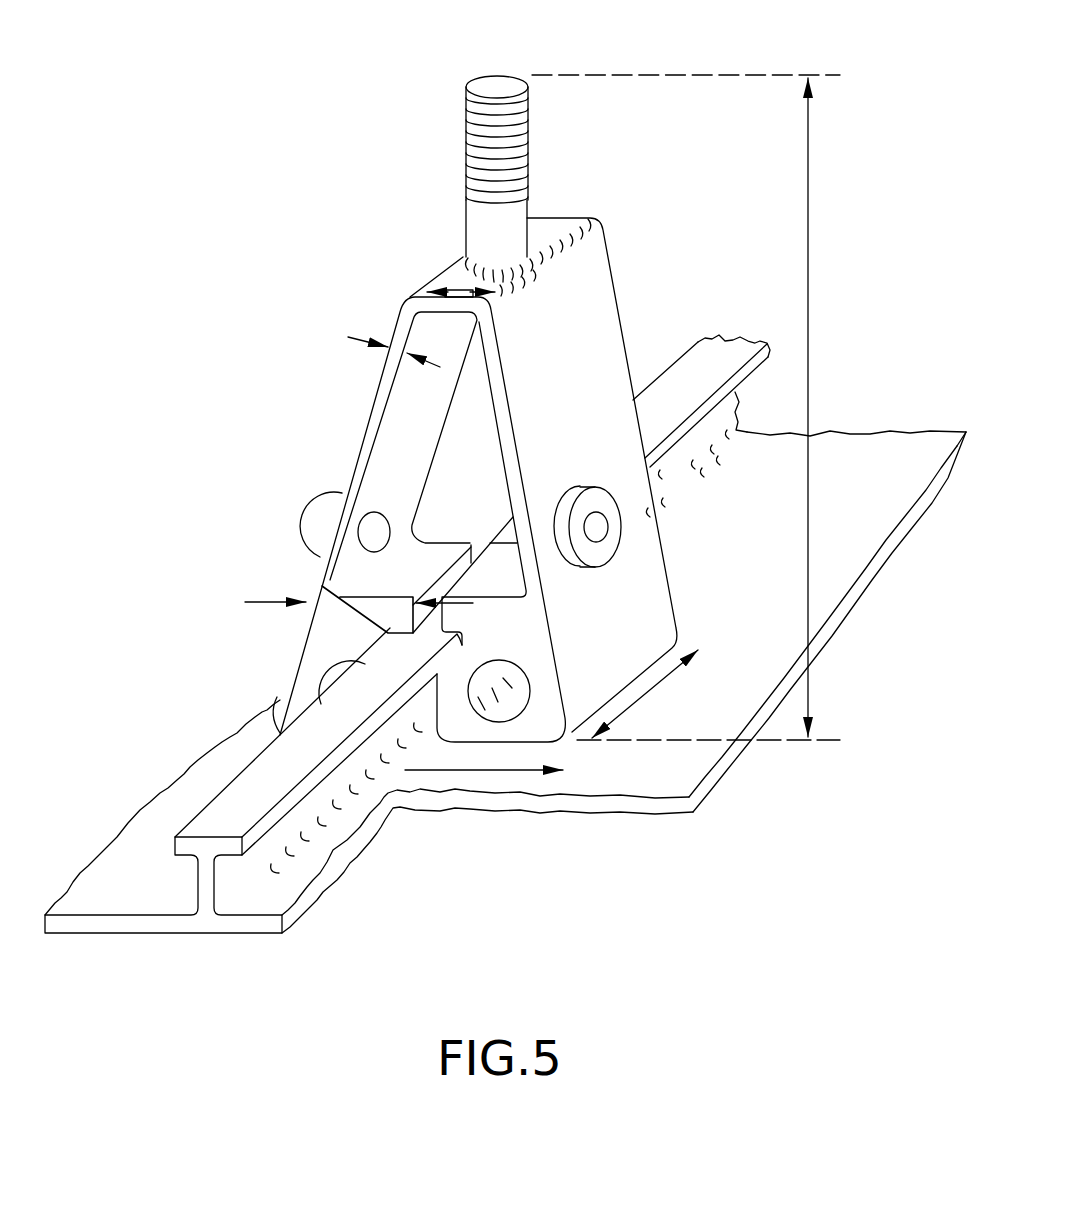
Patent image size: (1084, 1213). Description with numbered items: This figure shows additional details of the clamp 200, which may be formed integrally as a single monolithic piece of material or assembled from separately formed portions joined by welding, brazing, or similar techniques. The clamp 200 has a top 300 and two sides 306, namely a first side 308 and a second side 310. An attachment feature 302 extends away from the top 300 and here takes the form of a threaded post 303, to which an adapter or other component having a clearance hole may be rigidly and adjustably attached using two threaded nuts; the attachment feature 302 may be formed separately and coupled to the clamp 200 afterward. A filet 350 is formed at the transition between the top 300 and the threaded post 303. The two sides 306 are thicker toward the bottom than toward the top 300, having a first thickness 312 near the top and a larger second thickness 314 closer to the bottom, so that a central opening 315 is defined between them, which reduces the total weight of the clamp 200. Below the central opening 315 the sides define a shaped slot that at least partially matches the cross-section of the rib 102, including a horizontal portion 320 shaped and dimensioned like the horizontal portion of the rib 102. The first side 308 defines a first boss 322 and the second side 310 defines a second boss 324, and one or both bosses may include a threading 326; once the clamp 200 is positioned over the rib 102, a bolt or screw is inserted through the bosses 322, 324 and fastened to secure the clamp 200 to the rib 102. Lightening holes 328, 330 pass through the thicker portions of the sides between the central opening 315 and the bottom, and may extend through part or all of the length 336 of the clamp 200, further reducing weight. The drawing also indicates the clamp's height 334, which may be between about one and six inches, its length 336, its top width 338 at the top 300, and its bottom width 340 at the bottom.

The rib 102 is at (742, 378).
The clamp 200 is at (268, 277).
The top 300 is at (447, 278).
The attachment feature 302 is at (477, 88).
The threaded post 303 is at (524, 85).
The two sides 306 is at (333, 463).
The first side 308 is at (370, 410).
The second side 310 is at (603, 297).
The first thickness 312 is at (362, 336).
The second thickness 314 is at (245, 600).
The central opening 315 is at (491, 462).
The horizontal portion 320 is at (312, 590).
The first boss 322 is at (325, 513).
The second boss 324 is at (626, 487).
The threading 326 is at (596, 527).
The lightening hole 328 is at (325, 690).
The lightening hole 330 is at (515, 683).
The height 334 is at (808, 190).
The length 336 is at (650, 693).
The top width 338 is at (455, 288).
The bottom width 340 is at (510, 798).
The filet 350 is at (452, 240).